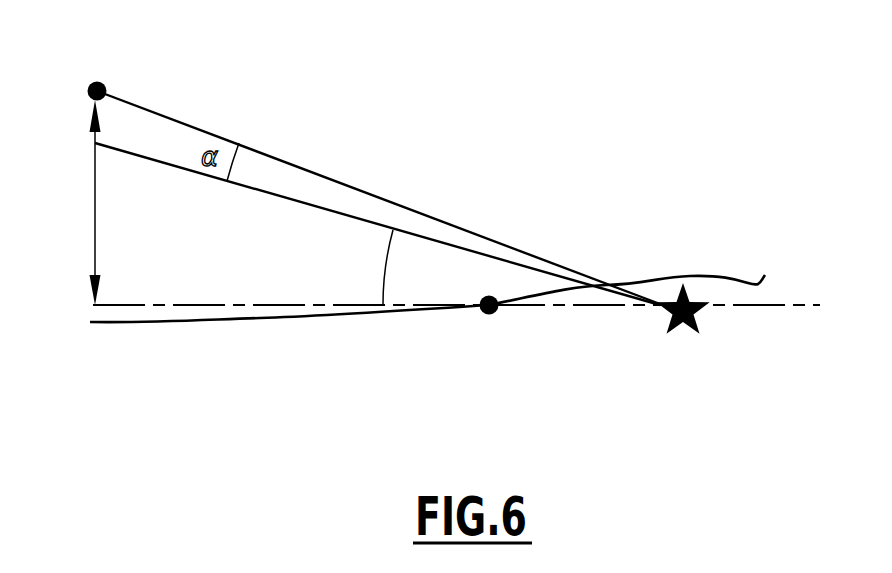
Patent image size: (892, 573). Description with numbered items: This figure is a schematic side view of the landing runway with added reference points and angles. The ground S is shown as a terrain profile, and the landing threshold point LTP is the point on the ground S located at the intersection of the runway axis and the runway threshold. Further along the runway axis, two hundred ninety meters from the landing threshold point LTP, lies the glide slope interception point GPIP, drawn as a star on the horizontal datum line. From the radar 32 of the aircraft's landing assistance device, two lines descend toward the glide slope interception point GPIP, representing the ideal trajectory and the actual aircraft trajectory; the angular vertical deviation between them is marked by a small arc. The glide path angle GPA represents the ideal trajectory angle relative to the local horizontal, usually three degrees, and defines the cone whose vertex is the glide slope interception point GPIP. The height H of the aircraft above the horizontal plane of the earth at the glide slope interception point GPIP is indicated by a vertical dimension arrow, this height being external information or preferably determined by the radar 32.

The radar 32 is at (88, 90).
The height of the aircraft H is at (86, 202).
The glide path angle GPA is at (360, 267).
The landing threshold point LTP is at (509, 324).
The ground S is at (720, 277).
The glide slope interception point GPIP is at (707, 319).